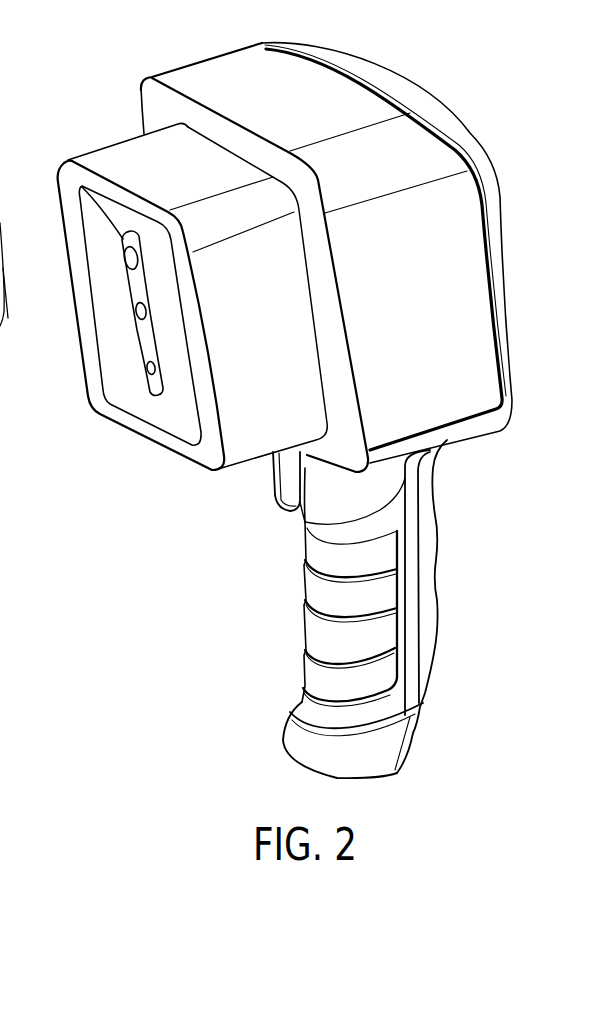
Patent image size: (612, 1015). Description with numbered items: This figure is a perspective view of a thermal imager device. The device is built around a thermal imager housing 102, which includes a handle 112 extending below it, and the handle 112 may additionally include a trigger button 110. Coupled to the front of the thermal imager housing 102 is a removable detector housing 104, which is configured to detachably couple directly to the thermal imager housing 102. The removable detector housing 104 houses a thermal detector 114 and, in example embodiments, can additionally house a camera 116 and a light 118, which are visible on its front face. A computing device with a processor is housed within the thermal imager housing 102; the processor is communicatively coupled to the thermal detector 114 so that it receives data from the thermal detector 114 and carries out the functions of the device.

The thermal imager housing 102 is at (290, 70).
The removable detector housing 104 is at (145, 153).
The trigger button 110 is at (278, 488).
The handle 112 is at (330, 633).
The thermal detector 114 is at (62, 163).
The camera 116 is at (137, 313).
The light 118 is at (147, 371).